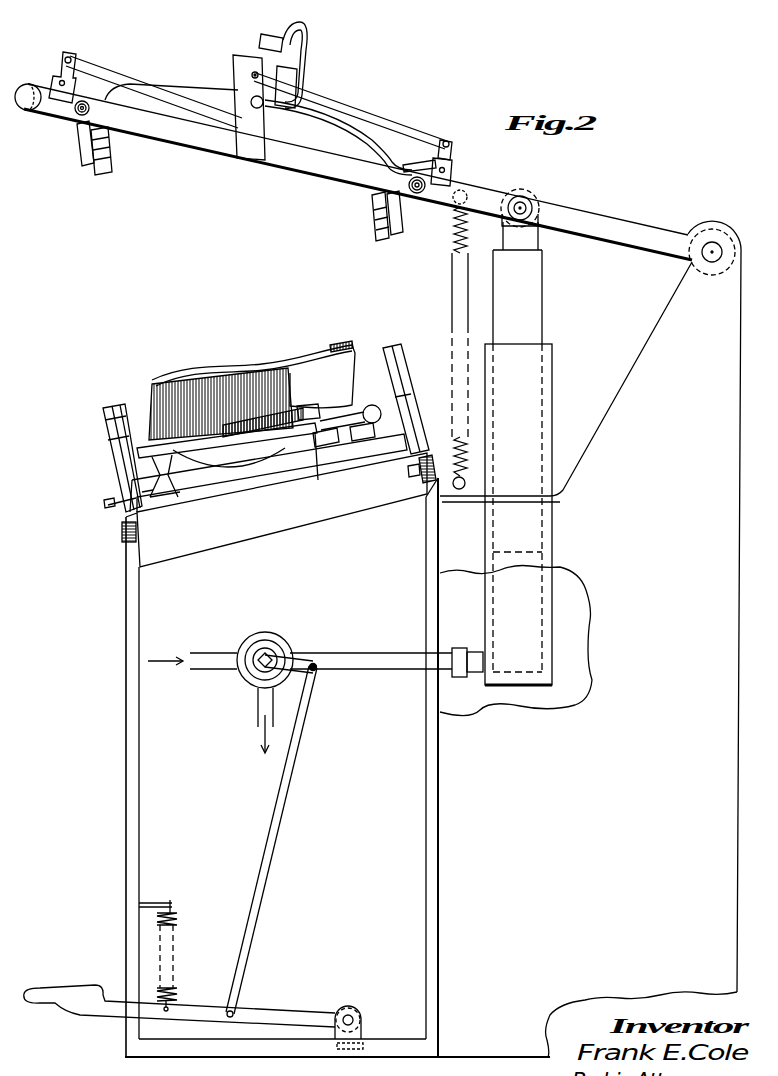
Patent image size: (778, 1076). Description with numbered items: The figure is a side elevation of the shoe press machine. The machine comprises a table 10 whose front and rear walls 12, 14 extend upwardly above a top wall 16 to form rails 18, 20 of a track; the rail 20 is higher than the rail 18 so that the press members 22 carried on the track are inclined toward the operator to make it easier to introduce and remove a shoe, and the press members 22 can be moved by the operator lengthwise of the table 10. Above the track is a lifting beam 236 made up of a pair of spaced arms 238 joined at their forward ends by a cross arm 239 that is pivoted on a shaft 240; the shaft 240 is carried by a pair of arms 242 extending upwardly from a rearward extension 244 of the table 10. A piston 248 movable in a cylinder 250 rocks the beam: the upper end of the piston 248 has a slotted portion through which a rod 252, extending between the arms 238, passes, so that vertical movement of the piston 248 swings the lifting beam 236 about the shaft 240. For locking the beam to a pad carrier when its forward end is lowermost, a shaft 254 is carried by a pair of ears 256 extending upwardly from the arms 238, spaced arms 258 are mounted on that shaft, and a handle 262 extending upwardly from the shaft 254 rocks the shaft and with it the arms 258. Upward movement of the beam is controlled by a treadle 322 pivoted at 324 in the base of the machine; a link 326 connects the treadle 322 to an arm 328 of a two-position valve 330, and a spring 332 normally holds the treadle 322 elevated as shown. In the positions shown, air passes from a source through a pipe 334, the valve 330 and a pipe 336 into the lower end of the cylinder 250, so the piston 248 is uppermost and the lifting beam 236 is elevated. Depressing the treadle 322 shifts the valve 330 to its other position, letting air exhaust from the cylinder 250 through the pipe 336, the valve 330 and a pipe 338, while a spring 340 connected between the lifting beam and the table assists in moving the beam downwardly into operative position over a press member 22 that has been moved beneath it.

The table 10 is at (100, 806).
The front wall 12 is at (126, 727).
The rear wall 14 is at (440, 760).
The top wall 16 is at (293, 535).
The rail 18 is at (128, 548).
The rail 20 is at (427, 494).
The press member 22 is at (126, 397).
The lifting beam 236 is at (413, 101).
The arms 238 is at (330, 170).
The cross arm 239 is at (30, 84).
The shaft 240 is at (712, 250).
The arms 242 is at (671, 302).
The rearward extension 244 is at (550, 486).
The piston 248 is at (544, 306).
The cylinder 250 is at (554, 365).
The rod 252 is at (524, 206).
The shaft 254 is at (250, 100).
The ears 256 is at (242, 148).
The arms 258 is at (252, 72).
The handle 262 is at (270, 36).
The treadle 322 is at (68, 1016).
The pivot 324 is at (352, 1017).
The link 326 is at (284, 810).
The arm 328 is at (300, 661).
The two-position valve 330 is at (266, 633).
The spring 332 is at (176, 920).
The pipe 334 is at (213, 668).
The pipe 336 is at (378, 669).
The pipe 338 is at (257, 706).
The spring 340 is at (452, 232).